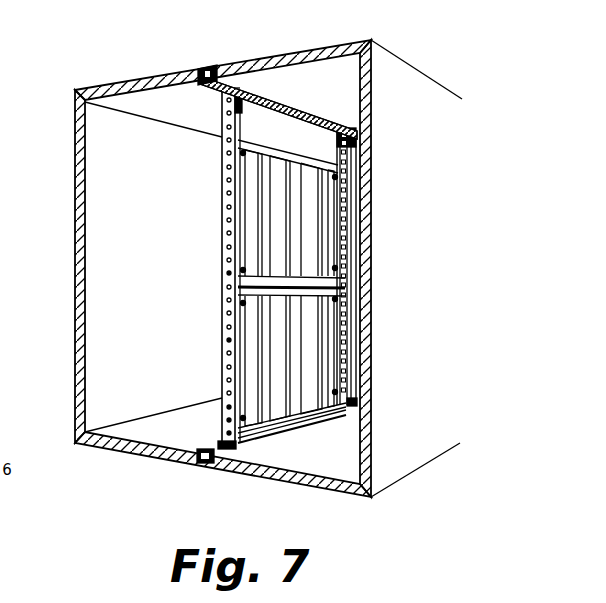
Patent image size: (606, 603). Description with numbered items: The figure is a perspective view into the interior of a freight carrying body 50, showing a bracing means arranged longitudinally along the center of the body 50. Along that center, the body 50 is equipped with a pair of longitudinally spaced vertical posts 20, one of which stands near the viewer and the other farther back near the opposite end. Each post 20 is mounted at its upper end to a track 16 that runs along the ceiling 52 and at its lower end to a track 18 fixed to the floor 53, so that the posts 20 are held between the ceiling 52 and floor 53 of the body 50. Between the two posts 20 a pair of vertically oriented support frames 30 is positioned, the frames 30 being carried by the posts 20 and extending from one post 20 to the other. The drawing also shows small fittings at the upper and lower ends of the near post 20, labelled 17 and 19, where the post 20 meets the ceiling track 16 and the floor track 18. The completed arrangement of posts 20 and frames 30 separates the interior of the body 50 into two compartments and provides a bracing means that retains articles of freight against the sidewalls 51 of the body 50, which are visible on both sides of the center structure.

The track 16 is at (273, 104).
The upper channel 17 is at (298, 114).
The track 18 is at (203, 452).
The base clip 19 is at (223, 443).
The vertical post 20 is at (222, 259).
The support frame 30 is at (265, 136).
The freight carrying body 50 is at (241, 268).
The sidewall 51 is at (143, 210).
The ceiling 52 is at (178, 113).
The floor 53 is at (313, 457).